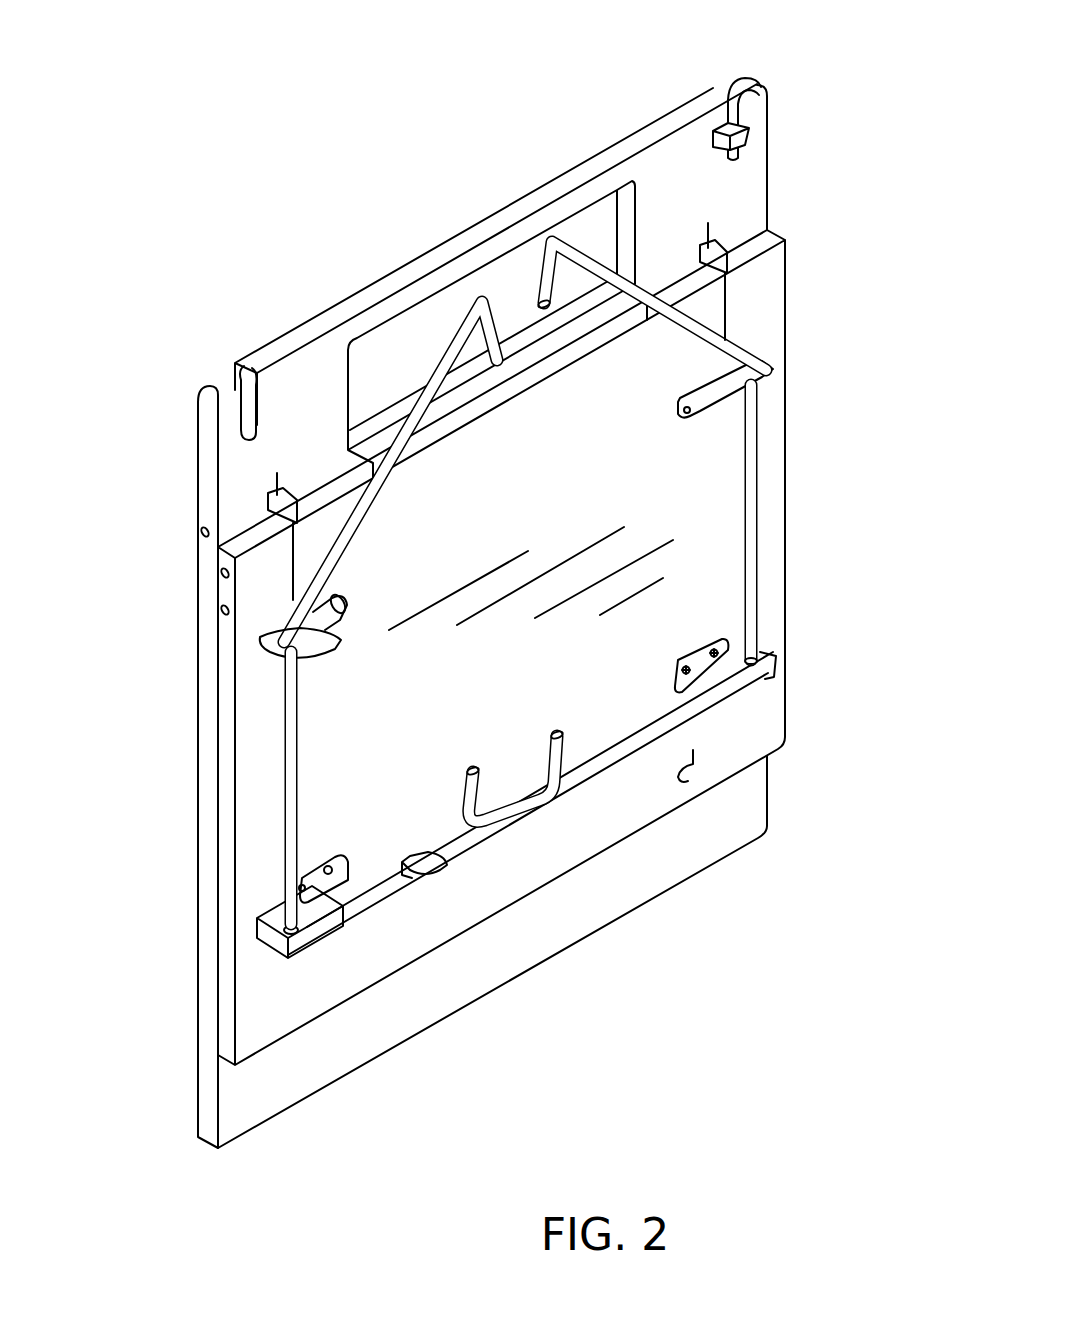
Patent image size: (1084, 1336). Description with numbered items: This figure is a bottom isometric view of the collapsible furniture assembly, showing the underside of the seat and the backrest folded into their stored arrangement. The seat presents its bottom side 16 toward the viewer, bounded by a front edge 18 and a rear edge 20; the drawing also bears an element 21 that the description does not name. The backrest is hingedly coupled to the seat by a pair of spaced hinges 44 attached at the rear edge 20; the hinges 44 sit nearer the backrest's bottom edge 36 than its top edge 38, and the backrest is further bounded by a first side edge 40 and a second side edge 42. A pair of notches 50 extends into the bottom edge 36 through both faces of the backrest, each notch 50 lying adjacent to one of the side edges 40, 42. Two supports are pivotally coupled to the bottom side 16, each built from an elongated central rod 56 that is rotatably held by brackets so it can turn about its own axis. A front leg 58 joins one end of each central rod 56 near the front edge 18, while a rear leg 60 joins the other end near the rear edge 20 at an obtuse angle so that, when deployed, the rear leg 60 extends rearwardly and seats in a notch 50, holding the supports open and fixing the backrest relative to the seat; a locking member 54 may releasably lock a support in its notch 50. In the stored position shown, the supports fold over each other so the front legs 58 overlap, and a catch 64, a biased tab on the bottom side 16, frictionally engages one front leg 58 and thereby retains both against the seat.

The bottom side 16 is at (692, 770).
The front edge 18 is at (537, 890).
The rear edge 20 is at (323, 490).
The upper rod 21 is at (572, 340).
The bottom edge 36 is at (523, 205).
The top edge 38 is at (311, 1097).
The first side edge 40 is at (768, 192).
The second side edge 42 is at (208, 503).
The hinges 44 is at (735, 250).
The notches 50 is at (745, 78).
The locking member 54 is at (740, 148).
The central rod 56 is at (760, 470).
The front leg 58 is at (380, 913).
The rear leg 60 is at (413, 413).
The catch 64 is at (410, 850).